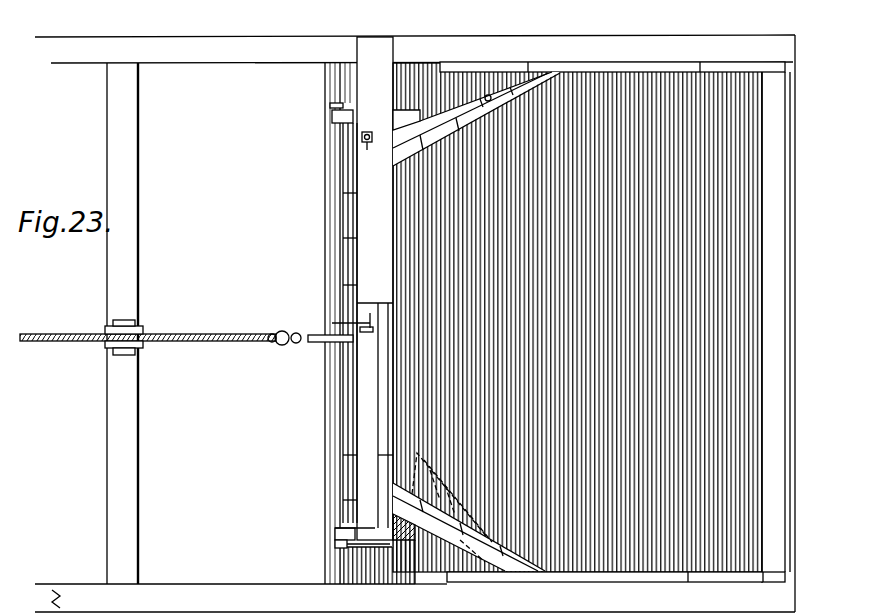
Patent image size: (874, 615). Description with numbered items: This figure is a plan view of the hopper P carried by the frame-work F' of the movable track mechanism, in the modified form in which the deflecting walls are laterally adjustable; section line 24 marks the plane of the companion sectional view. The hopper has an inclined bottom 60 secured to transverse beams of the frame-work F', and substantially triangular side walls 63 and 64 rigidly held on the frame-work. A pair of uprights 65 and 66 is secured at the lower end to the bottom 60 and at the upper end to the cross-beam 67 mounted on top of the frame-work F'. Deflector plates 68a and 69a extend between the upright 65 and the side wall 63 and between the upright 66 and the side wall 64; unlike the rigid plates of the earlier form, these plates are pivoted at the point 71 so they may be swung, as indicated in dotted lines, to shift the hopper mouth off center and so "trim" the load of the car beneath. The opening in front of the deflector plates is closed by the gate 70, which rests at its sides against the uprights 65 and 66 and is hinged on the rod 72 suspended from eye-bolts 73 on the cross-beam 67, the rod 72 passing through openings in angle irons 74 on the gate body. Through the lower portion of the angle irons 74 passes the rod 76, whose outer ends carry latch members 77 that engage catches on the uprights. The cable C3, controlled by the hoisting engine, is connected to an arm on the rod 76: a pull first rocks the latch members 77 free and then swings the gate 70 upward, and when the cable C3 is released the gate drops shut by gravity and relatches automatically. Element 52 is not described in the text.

The section line 24 is at (352, 30).
The cable clamp 52 is at (128, 326).
The inclined bottom 60 is at (745, 382).
The side wall 63 is at (722, 572).
The side wall 64 is at (672, 72).
The upright 65 is at (405, 541).
The upright 66 is at (398, 122).
The cross-beam 67 is at (367, 82).
The adjustable deflector plate 68a is at (455, 540).
The adjustable deflector plate 69a is at (455, 112).
The gate 70 is at (386, 431).
The pivot point 71 is at (492, 97).
The rod 72 is at (376, 383).
The eye-bolt 73 is at (374, 158).
The angle iron 74 is at (330, 122).
The rod 76 is at (340, 484).
The latch member 77 is at (330, 106).
The cable C3 is at (240, 330).
The frame-work F' is at (415, 323).
The hopper P is at (742, 472).